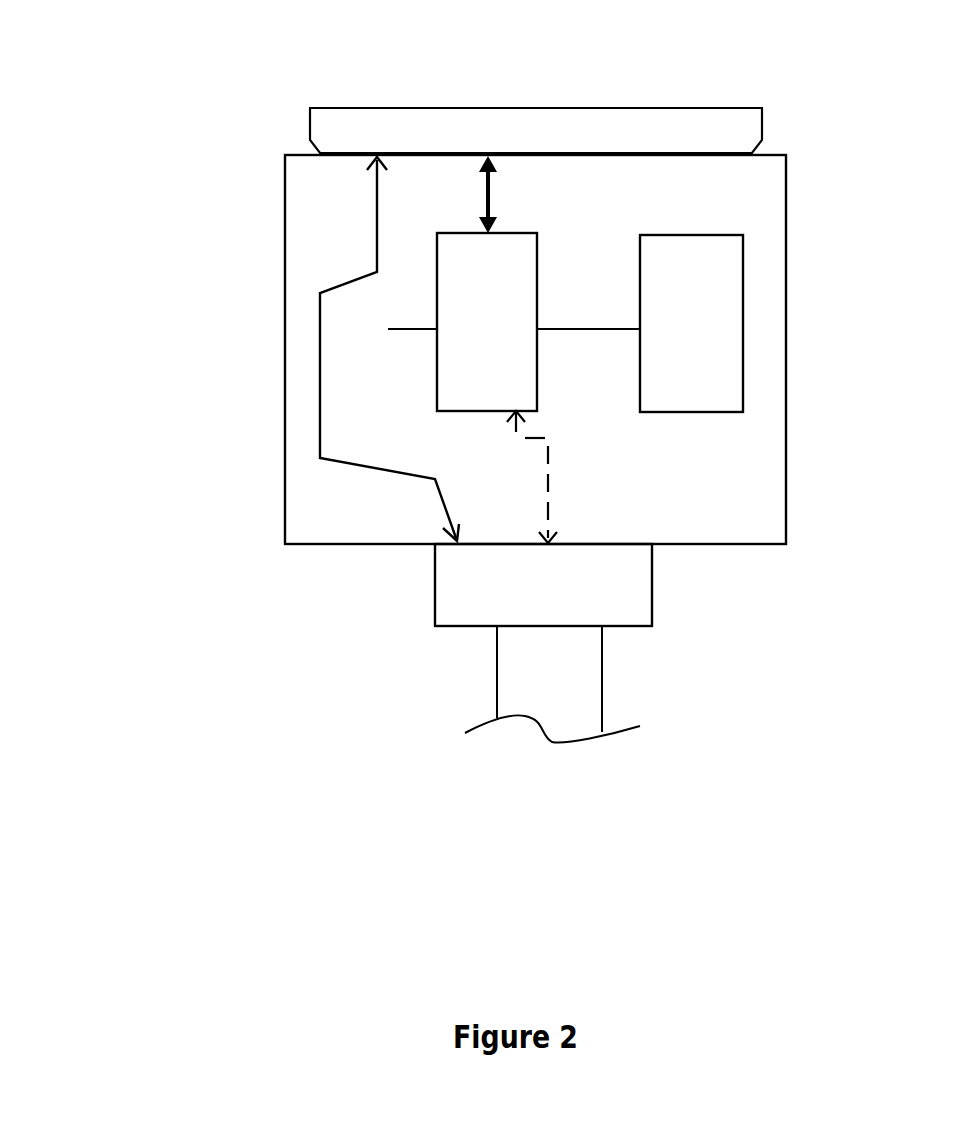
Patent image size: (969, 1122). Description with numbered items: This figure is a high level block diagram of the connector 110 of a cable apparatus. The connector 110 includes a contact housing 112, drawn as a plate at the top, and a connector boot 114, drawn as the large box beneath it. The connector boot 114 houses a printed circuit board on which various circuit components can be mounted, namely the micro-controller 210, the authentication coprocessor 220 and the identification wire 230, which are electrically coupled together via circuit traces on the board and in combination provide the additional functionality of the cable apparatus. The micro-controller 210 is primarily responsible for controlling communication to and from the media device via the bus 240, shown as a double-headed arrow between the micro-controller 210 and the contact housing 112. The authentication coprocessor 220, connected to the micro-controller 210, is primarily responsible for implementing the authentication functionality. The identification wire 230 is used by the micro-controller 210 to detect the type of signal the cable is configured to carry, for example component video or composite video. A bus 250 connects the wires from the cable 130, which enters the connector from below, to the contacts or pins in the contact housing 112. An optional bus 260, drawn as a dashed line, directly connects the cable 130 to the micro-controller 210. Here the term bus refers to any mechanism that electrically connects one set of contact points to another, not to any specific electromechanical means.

The connector 110 is at (158, 97).
The contact housing 112 is at (765, 116).
The connector boot 114 is at (787, 362).
The cable 130 is at (603, 700).
The micro-controller 210 is at (470, 412).
The authentication coprocessor 220 is at (702, 413).
The identification wire 230 is at (398, 331).
The bus 240 is at (483, 197).
The bus 250 is at (357, 467).
The optional bus 260 is at (550, 487).